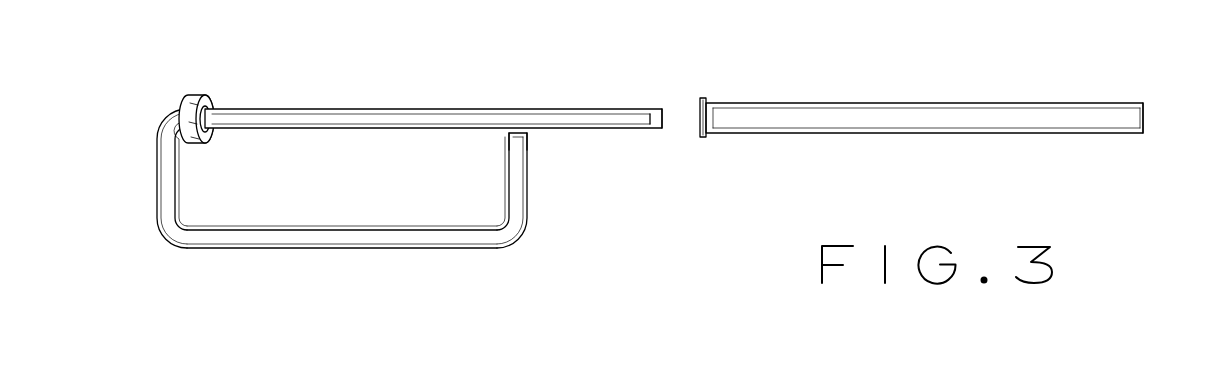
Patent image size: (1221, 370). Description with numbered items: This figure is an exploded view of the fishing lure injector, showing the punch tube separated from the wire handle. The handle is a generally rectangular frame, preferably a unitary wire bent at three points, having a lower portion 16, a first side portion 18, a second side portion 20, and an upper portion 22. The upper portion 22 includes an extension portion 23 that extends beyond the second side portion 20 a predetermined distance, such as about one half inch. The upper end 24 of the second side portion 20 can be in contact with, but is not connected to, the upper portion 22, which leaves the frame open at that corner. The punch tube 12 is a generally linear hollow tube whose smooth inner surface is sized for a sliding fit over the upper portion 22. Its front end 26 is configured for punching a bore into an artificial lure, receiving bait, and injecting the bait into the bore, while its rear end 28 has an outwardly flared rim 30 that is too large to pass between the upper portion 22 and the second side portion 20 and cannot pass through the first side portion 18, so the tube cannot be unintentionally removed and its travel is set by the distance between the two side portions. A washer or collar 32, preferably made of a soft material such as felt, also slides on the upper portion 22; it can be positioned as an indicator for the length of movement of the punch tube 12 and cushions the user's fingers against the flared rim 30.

The punch tube 12 is at (872, 103).
The lower portion 16 is at (380, 240).
The first side portion 18 is at (157, 173).
The second side portion 20 is at (522, 198).
The upper portion 22 is at (375, 108).
The extension portion 23 is at (636, 108).
The upper end 24 is at (518, 148).
The front end 26 is at (1133, 103).
The rear end 28 is at (815, 128).
The flared rim 30 is at (702, 97).
The washer 32 is at (190, 93).